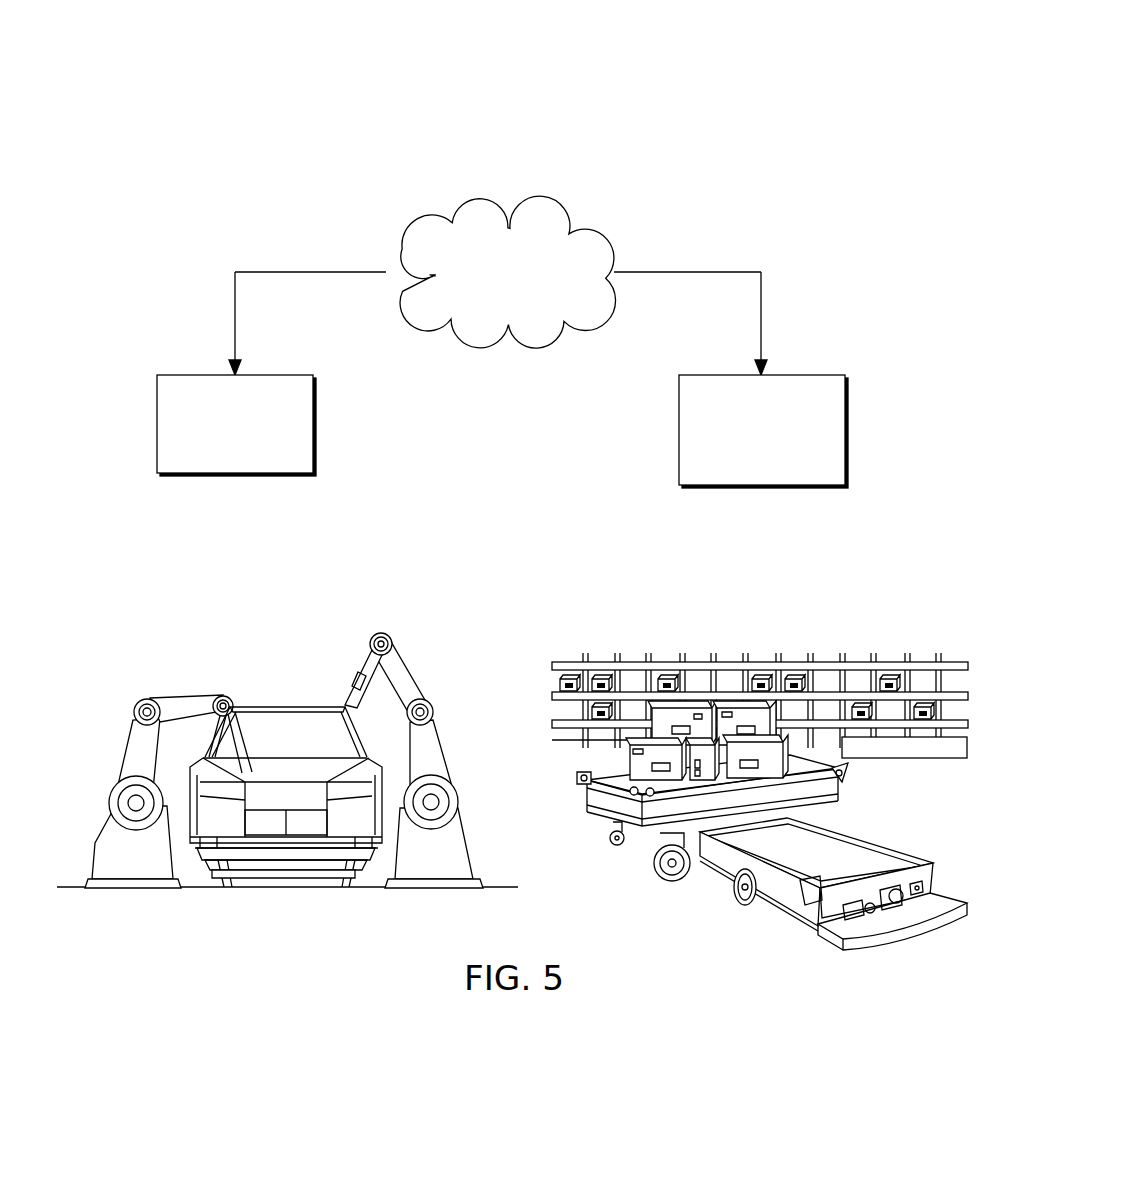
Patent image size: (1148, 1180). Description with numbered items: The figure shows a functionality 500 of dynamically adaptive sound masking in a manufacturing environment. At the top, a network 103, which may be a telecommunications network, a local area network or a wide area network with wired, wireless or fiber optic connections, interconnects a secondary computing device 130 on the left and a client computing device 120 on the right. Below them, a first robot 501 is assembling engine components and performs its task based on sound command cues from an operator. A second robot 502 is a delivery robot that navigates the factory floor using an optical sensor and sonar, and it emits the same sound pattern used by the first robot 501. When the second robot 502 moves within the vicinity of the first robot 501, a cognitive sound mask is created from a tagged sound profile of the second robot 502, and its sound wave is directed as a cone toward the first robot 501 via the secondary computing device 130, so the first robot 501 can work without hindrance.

The system 500 is at (680, 81).
The network 103 is at (571, 210).
The secondary computing device 130 is at (183, 376).
The client computing device 120 is at (807, 376).
The first robot 501 is at (186, 697).
The second robot 502 is at (883, 844).